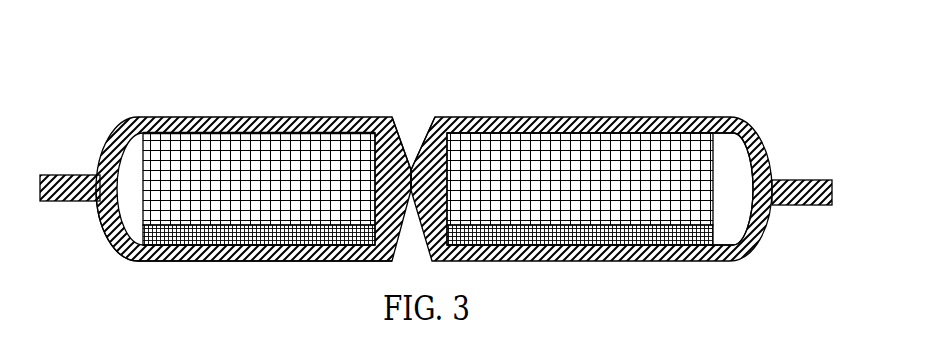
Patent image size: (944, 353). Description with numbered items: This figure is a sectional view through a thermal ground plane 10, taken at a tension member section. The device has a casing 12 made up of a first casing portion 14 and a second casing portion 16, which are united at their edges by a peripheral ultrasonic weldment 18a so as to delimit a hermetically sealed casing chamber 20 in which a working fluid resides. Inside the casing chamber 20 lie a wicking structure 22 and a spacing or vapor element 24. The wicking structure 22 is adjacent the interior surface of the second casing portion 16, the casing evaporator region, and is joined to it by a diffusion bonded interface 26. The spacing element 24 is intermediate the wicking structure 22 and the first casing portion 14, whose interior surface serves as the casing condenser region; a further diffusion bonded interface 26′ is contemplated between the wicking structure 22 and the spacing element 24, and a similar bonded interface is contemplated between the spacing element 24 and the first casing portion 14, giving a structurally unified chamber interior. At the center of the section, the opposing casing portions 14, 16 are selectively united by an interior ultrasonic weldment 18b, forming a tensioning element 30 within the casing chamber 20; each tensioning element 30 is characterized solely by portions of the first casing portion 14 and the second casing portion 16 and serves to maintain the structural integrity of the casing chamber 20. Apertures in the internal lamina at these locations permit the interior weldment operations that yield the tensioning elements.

The thermal ground plane 10 is at (437, 183).
The casing 12 is at (758, 132).
The first casing portion 14 is at (137, 114).
The second casing portion 16 is at (135, 263).
The peripheral ultrasonic weldment 18a is at (68, 193).
The interior ultrasonic weldment 18b is at (417, 172).
The casing chamber 20 is at (732, 226).
The wicking structure 22 is at (238, 248).
The spacing element 24 is at (570, 157).
The diffusion bonded interface 26 is at (306, 250).
The diffusion bonded interface 26′ is at (225, 222).
The tensioning element 30 is at (407, 165).